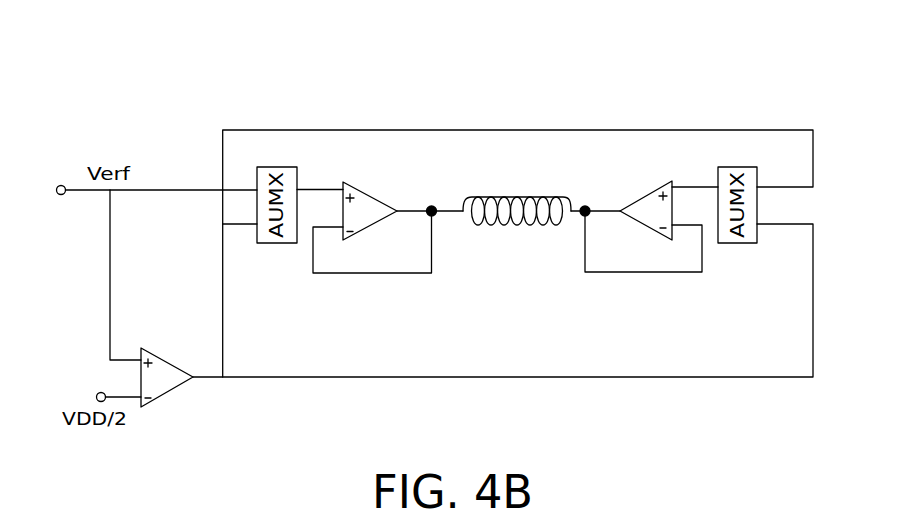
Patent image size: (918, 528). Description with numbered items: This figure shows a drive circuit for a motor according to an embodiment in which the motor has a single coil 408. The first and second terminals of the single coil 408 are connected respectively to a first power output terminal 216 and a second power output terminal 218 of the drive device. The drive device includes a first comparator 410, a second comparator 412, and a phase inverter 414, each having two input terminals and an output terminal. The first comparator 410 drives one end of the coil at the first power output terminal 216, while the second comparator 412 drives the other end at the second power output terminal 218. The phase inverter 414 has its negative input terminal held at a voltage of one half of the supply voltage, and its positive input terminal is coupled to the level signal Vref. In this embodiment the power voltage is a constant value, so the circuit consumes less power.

The first comparator 410 is at (372, 192).
The second comparator 412 is at (647, 193).
The first power output terminal 216 is at (432, 205).
The second power output terminal 218 is at (585, 207).
The single coil 408 is at (512, 230).
The phase inverter 414 is at (173, 400).